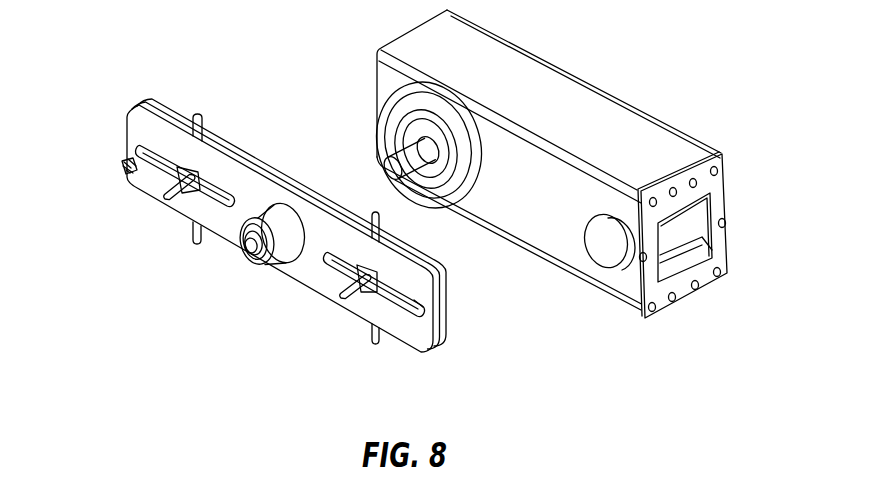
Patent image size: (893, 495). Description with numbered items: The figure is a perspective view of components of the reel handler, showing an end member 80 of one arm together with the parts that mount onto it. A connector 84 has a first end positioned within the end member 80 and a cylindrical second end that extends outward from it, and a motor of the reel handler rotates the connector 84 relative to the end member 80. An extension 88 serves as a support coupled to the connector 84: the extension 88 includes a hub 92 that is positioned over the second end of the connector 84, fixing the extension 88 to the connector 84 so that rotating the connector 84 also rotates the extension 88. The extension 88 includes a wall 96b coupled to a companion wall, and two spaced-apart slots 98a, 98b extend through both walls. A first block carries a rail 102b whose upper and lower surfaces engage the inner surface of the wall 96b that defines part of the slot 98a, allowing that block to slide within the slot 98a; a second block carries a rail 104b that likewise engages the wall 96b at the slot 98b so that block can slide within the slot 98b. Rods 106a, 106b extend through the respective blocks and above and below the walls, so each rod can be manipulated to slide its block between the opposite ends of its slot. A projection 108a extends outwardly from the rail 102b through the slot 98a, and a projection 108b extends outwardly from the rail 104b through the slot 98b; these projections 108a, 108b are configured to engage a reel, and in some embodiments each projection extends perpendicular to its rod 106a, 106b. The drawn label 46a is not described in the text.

The end member 80 is at (588, 118).
The connector 84 is at (413, 156).
The extension 88 is at (122, 88).
The gasket plate 46a is at (266, 166).
The wall 96b is at (138, 132).
The slot 98a is at (124, 165).
The slot 98b is at (422, 312).
The second rail 102b is at (197, 192).
The second rail 104b is at (378, 286).
The rod 106a is at (199, 115).
The rod 106b is at (380, 222).
The projection 108a is at (172, 192).
The projection 108b is at (343, 297).
The hub 92 is at (282, 249).